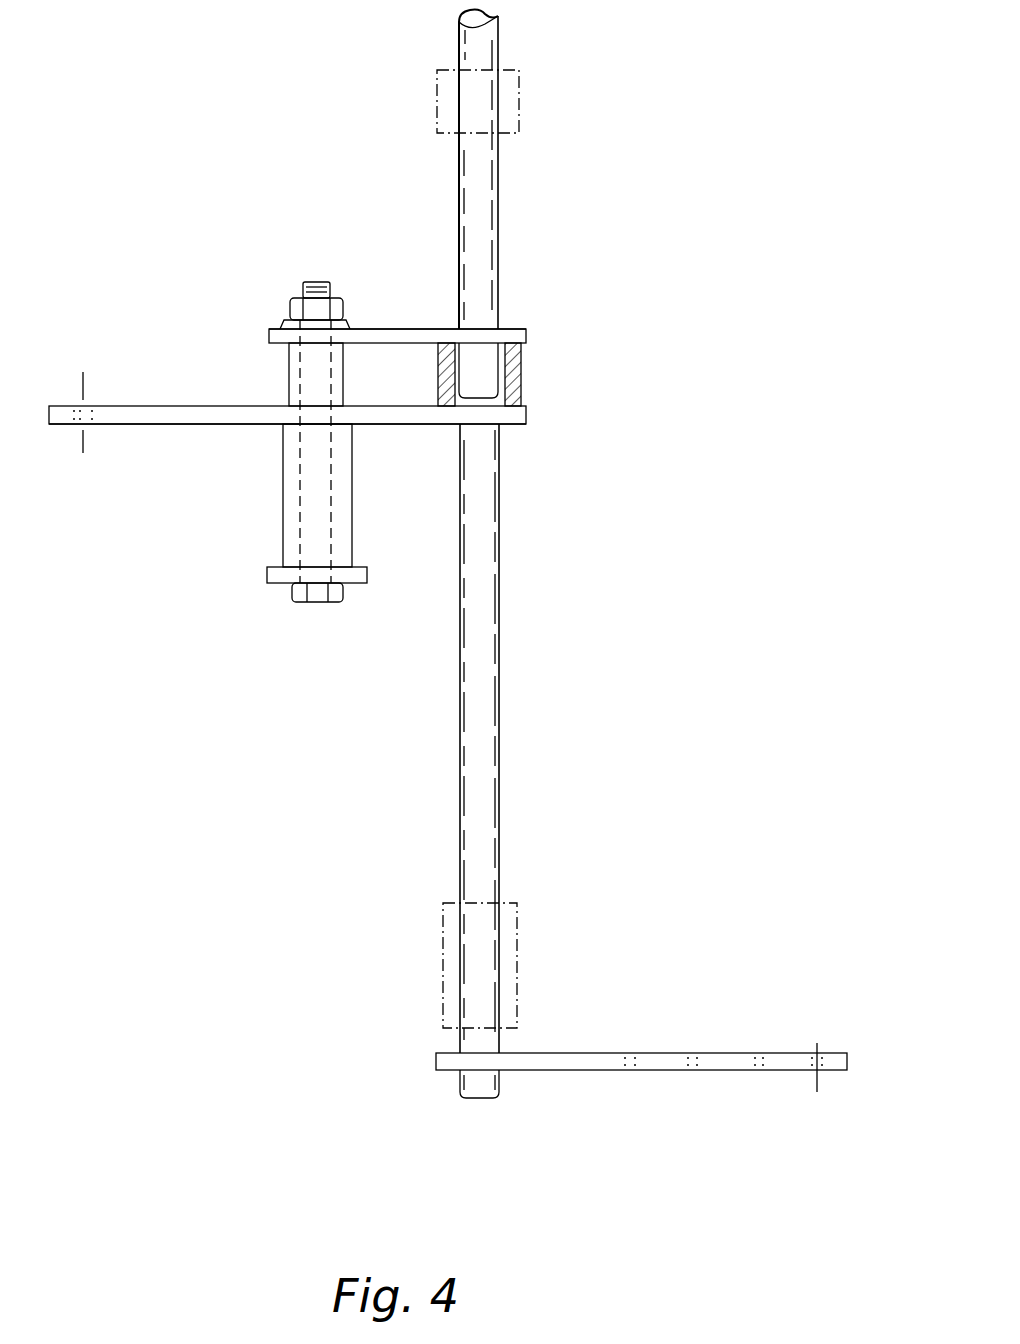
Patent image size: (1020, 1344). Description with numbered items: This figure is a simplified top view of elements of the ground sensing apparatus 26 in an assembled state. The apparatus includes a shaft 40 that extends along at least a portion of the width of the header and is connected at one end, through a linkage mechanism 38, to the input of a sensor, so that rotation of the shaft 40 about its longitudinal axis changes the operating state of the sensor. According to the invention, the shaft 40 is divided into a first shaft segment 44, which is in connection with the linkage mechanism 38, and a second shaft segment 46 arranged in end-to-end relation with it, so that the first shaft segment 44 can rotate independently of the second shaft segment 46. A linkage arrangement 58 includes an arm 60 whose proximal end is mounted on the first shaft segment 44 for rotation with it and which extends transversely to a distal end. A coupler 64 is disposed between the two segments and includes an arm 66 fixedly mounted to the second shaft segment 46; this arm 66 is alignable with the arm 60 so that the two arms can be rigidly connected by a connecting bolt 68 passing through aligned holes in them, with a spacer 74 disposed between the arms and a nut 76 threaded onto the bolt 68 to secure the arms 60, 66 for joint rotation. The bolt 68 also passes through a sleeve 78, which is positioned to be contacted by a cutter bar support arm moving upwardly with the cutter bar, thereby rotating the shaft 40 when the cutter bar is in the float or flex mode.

The ground sensing apparatus 26 is at (500, 1100).
The linkage mechanism 38 is at (833, 1071).
The shaft 40 is at (502, 687).
The first shaft segment 44 is at (500, 862).
The second shaft segment 46 is at (498, 257).
The linkage arrangement 58 is at (155, 403).
The arm 60 is at (187, 425).
The coupler 64 is at (529, 327).
The arm 66 is at (367, 327).
The connecting bolt 68 is at (328, 282).
The spacer 74 is at (343, 370).
The nut 76 is at (292, 302).
The sleeve 78 is at (283, 537).